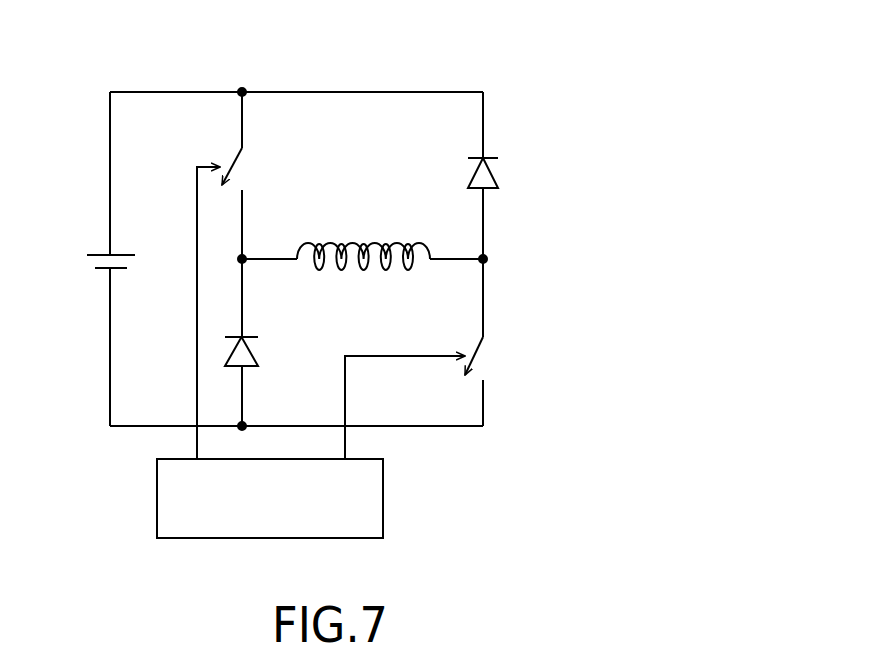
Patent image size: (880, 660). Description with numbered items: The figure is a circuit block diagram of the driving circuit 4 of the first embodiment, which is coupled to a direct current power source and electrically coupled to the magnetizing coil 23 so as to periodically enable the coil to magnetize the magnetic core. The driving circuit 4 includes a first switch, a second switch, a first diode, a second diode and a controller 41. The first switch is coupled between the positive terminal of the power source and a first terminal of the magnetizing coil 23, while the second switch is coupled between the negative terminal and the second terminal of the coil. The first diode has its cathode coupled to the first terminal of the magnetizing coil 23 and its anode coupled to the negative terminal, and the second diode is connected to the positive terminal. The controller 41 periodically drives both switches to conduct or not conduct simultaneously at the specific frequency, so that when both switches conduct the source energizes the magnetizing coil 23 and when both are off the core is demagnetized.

The driving circuit 4 is at (473, 55).
The magnetizing coil 23 is at (373, 243).
The controller 41 is at (383, 493).